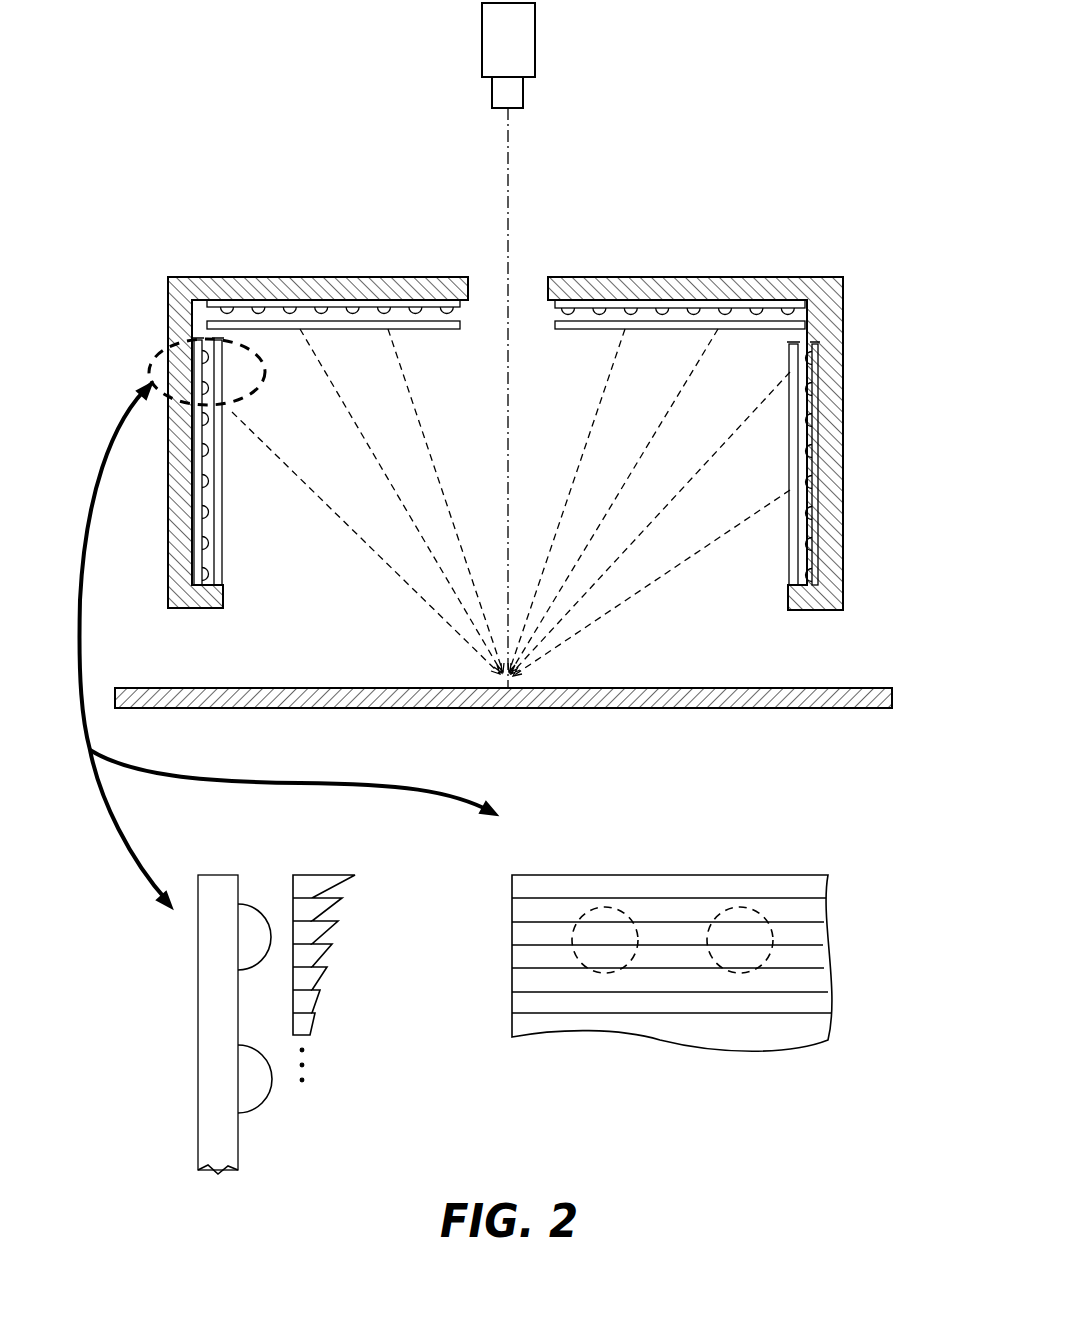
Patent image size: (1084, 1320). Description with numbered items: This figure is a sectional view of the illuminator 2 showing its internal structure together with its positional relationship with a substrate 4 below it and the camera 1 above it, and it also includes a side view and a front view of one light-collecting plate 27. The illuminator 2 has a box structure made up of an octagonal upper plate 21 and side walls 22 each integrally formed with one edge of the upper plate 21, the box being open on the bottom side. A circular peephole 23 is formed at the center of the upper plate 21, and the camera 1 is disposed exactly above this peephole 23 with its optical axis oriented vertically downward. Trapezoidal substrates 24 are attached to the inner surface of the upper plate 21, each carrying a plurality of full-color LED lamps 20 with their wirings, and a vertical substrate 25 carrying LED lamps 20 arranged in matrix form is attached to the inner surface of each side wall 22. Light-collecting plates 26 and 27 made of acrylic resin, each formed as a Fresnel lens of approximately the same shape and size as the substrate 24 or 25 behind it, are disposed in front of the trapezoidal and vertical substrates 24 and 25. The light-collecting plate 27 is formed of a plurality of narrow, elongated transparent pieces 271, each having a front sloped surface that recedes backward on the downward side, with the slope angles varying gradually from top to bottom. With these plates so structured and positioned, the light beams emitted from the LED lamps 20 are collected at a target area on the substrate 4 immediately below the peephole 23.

The camera 1 is at (535, 30).
The illuminator 2 is at (510, 406).
The substrate 4 is at (862, 688).
The full-color LED lamp 20 is at (445, 310).
The upper plate 21 is at (808, 292).
The side wall 22 is at (175, 517).
The peephole 23 is at (543, 285).
The trapezoidal substrate 24 is at (338, 305).
The vertical substrate 25 is at (200, 573).
The light-collecting plate 26 is at (450, 330).
The light-collecting plate 27 is at (220, 528).
The transparent piece 271 is at (332, 935).